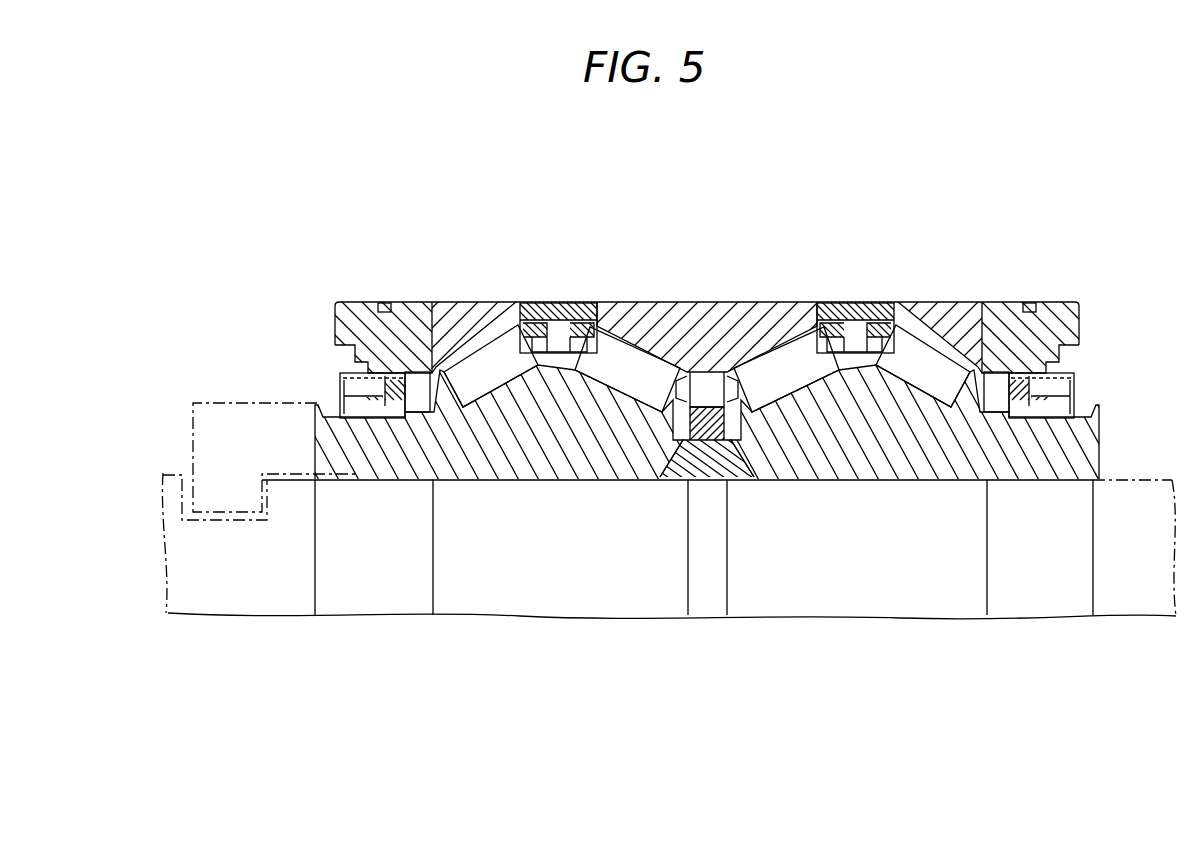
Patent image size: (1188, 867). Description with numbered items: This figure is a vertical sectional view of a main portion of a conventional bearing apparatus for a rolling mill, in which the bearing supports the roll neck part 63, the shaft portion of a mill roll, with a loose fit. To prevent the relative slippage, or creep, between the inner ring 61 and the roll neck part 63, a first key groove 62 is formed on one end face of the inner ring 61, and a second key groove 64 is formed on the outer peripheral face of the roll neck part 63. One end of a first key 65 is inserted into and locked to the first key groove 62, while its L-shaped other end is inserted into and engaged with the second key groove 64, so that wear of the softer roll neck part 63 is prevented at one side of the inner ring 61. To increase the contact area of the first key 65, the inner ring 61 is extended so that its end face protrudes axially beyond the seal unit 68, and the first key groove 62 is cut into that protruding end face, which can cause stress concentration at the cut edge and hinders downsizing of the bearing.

The inner ring 61 is at (550, 393).
The first key groove 62 is at (345, 482).
The roll neck part 63 is at (467, 532).
The second key groove 64 is at (180, 497).
The first key 65 is at (247, 432).
The seal unit 68 is at (367, 388).